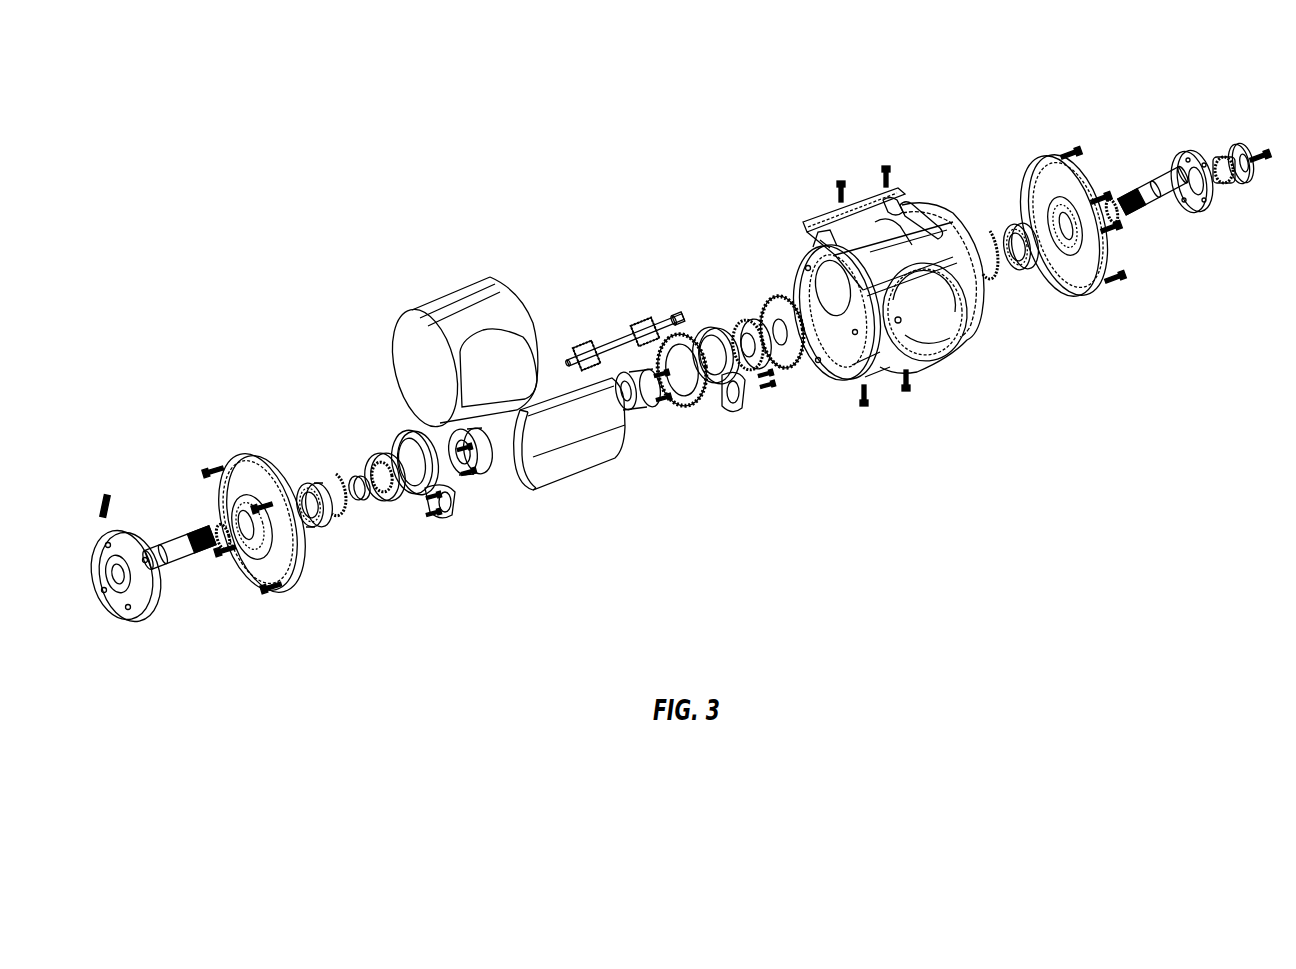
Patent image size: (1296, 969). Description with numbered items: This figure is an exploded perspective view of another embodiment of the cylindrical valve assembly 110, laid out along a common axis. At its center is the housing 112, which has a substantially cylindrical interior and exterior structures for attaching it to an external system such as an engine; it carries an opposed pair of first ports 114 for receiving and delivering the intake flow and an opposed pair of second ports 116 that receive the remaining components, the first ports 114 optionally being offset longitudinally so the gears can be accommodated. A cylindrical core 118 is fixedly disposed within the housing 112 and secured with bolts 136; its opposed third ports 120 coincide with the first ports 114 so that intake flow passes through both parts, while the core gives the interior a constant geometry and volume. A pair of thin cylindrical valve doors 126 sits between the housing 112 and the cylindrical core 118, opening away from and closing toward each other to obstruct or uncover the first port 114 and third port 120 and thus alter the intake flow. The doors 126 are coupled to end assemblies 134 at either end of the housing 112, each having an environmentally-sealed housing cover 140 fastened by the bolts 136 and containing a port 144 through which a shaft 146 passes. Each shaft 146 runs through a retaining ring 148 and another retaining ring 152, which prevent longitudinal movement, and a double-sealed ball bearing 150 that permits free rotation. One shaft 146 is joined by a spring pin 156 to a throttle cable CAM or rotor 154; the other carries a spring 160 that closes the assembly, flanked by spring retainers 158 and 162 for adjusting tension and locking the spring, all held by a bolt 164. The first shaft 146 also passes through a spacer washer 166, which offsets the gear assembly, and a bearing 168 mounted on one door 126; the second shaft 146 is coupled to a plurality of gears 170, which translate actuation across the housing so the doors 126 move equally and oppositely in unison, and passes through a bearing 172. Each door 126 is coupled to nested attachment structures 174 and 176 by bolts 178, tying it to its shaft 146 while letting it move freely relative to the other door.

The cylindrical valve assembly 110 is at (757, 62).
The housing 112 is at (982, 318).
The first ports 114 is at (925, 330).
The second ports 116 is at (843, 330).
The cylindrical core 118 is at (455, 288).
The third ports 120 is at (502, 348).
The cylindrical valve doors 126 is at (595, 457).
The end assemblies 134 is at (232, 400).
The bolts 136 is at (888, 150).
The housing cover 140 is at (254, 455).
The port 144 is at (248, 533).
The shaft 146 is at (170, 546).
The retaining ring 148 is at (222, 538).
The double-sealed ball bearing 150 is at (307, 482).
The retaining ring 152 is at (340, 514).
The throttle cable CAM or rotor 154 is at (126, 612).
The spring pin 156 is at (108, 495).
The spring retainer 158 is at (1188, 152).
The spring 160 is at (1225, 186).
The spring retainer 162 is at (1247, 183).
The bolt 164 is at (1262, 148).
The spacer washer 166 is at (362, 500).
The bearing 168 is at (397, 500).
The plurality of gears 170 is at (670, 306).
The bearing 172 is at (745, 328).
The attachment structure 174 is at (450, 514).
The attachment structure 176 is at (490, 474).
The bolts 178 is at (432, 527).